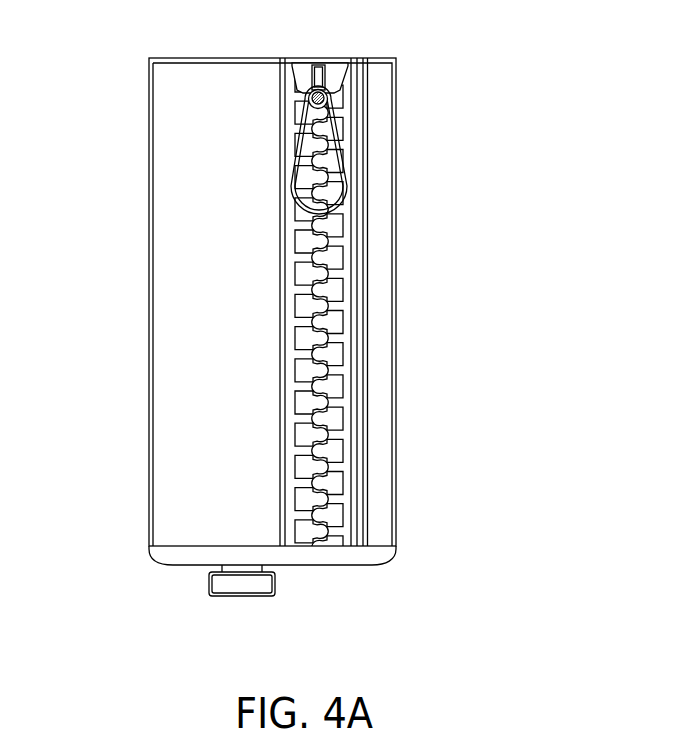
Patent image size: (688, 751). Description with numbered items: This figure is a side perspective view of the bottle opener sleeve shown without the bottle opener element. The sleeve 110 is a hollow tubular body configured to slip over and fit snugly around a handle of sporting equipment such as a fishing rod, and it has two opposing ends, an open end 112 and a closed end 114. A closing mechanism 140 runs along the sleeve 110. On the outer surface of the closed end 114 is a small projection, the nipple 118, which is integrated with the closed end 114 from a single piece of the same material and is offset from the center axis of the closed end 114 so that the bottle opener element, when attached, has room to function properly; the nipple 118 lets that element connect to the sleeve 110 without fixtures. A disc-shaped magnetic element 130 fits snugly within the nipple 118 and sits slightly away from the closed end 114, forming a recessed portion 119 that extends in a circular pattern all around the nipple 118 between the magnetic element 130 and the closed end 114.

The sleeve 110 is at (149, 286).
The open end 112 is at (362, 63).
The closed end 114 is at (365, 567).
The nipple 118 is at (275, 585).
The recessed portion 119 is at (208, 572).
The magnetic element 130 is at (222, 597).
The closing mechanism 140 is at (348, 132).